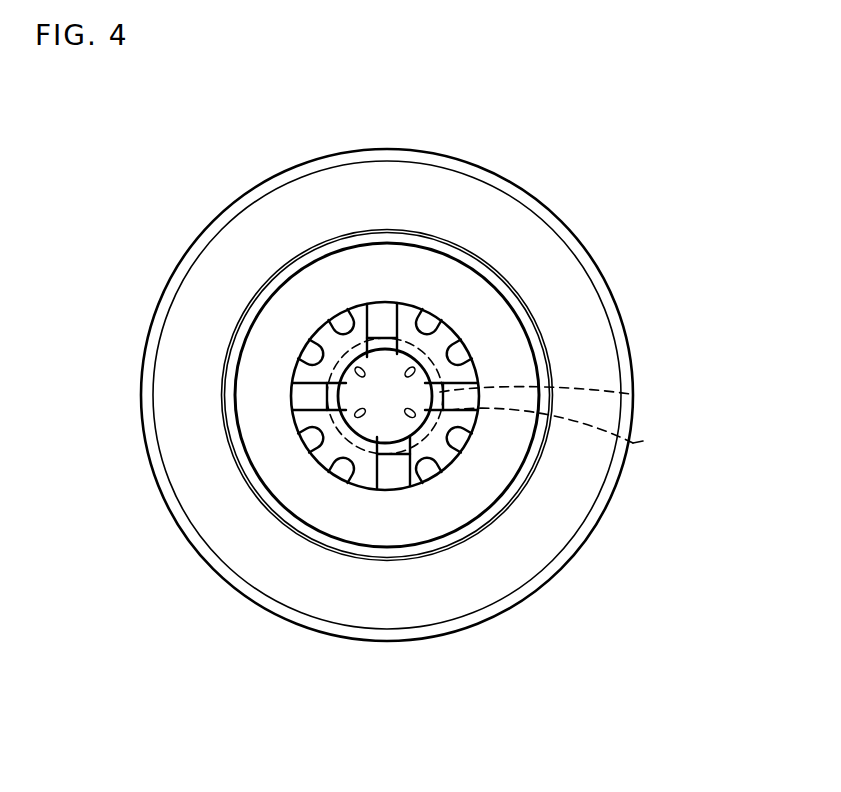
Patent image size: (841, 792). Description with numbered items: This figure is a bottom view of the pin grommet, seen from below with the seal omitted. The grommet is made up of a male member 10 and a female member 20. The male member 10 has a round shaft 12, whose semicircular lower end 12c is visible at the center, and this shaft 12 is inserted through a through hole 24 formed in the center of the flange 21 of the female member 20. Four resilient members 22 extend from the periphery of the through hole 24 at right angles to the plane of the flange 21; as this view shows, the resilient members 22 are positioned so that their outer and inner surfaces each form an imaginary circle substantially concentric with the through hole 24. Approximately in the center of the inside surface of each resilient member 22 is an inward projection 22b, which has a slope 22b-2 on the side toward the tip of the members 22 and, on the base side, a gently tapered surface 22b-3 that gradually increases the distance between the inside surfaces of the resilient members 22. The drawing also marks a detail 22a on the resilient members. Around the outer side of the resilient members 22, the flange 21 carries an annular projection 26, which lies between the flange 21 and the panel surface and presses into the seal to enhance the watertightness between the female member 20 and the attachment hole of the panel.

The male member 10 is at (405, 445).
The shaft 12 is at (384, 371).
The semicircular lower end 12c is at (360, 413).
The female member 20 is at (487, 180).
The flange 21 is at (613, 482).
The resilient members 22 is at (358, 307).
The bore 22a is at (392, 425).
The inward projection 22b is at (353, 370).
The slope 22b-2 is at (403, 303).
The gently tapered surface 22b-3 is at (467, 413).
The through hole 24 is at (630, 394).
The annular projection 26 is at (487, 263).